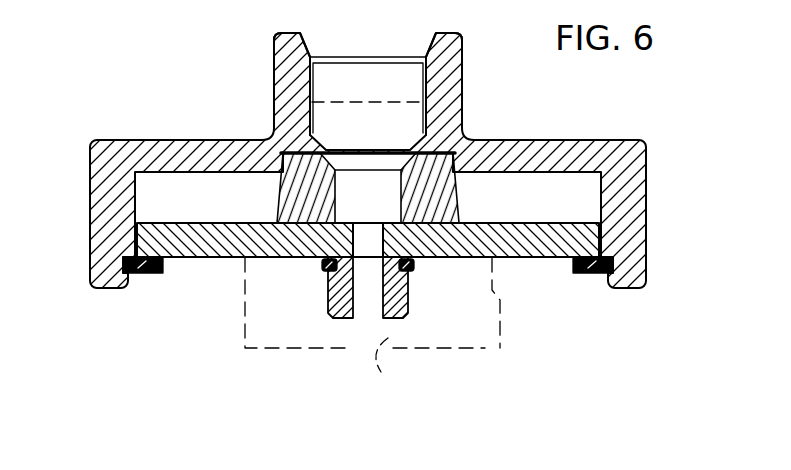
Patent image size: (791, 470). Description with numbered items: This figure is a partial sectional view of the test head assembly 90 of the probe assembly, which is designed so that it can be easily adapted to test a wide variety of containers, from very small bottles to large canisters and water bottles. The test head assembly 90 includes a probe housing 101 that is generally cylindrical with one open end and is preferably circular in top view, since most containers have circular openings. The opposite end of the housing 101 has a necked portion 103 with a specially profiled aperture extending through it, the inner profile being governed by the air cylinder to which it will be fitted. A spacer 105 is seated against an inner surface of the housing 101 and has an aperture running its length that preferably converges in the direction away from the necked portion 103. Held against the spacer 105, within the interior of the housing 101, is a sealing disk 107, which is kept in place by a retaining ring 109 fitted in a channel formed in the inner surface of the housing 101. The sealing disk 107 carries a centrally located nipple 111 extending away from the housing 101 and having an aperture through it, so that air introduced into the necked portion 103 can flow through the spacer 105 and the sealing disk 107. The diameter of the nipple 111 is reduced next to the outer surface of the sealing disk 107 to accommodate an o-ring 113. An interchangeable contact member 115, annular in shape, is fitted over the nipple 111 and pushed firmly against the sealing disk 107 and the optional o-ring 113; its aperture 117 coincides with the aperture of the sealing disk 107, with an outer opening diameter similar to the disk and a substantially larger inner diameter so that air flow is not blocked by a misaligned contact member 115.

The test head assembly 90 is at (162, 105).
The probe housing 101 is at (632, 169).
The necked portion 103 is at (450, 78).
The spacer 105 is at (445, 197).
The sealing disk 107 is at (537, 258).
The retaining ring 109 is at (160, 276).
The nipple 111 is at (330, 308).
The o-ring 113 is at (416, 278).
The interchangeable contact member 115 is at (257, 375).
The aperture 117 is at (403, 368).